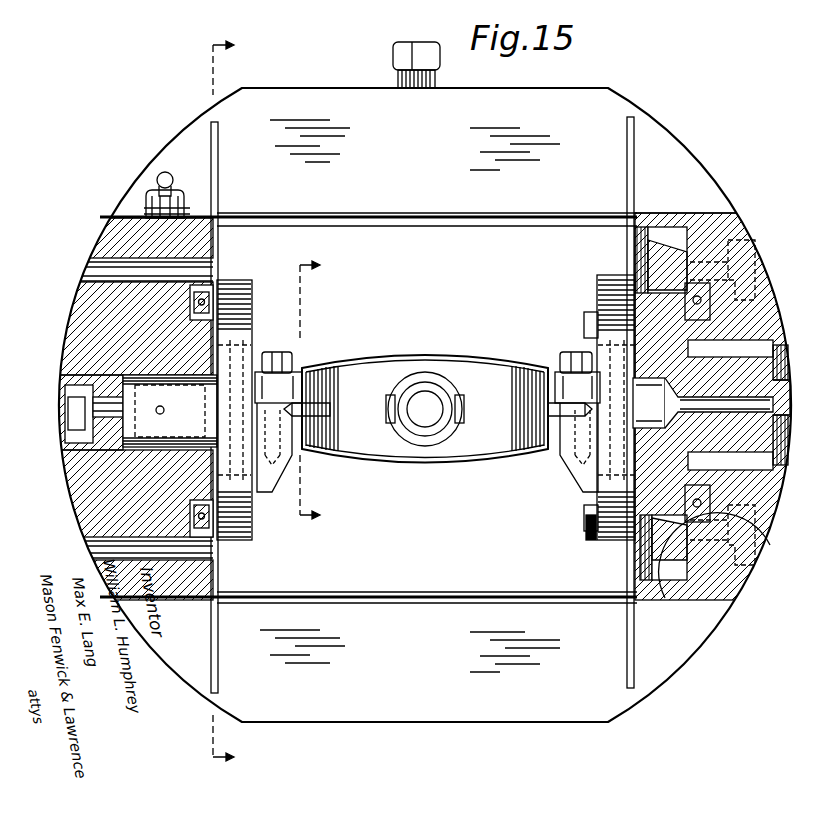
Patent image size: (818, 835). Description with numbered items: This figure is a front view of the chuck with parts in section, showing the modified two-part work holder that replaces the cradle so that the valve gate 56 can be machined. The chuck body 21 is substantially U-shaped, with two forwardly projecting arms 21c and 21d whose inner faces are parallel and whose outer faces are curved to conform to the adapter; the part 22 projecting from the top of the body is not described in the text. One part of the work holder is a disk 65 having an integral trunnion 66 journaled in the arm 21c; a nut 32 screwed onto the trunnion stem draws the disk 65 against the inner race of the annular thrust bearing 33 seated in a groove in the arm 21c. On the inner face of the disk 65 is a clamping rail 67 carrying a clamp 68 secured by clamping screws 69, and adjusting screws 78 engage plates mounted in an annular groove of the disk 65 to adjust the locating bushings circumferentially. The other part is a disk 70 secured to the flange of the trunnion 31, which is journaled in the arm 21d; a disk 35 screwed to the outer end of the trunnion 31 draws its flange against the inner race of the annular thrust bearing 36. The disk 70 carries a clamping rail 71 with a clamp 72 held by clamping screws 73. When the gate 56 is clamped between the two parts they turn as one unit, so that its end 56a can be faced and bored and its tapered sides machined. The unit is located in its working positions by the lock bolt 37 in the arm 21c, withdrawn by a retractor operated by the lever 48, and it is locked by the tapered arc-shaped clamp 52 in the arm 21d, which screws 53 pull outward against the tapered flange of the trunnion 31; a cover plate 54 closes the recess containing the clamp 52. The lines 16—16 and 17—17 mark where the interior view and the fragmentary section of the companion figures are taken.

The chuck body 21 is at (548, 712).
The arm of chuck body 21c is at (115, 248).
The arm of chuck body 21d is at (735, 215).
The filler plug 22 is at (390, 85).
The lever 48 is at (160, 172).
The lock bolt 37 is at (150, 345).
The nut 32 is at (75, 388).
The trunnion 66 is at (90, 490).
The disk 65 is at (232, 285).
The annular thrust bearing 33 is at (215, 545).
The adjusting screws 78 is at (238, 292).
The clamping screws 69 is at (276, 352).
The clamp 68 is at (298, 372).
The clamping rail 67 is at (265, 492).
The end of valve gate 56a is at (322, 380).
The valve gate 56 is at (463, 365).
The clamp 72 is at (556, 372).
The clamping screws 73 is at (575, 352).
The clamping rail 71 is at (570, 462).
The disk 70 is at (600, 528).
The cover plate 54 is at (655, 228).
The screws 53 is at (760, 266).
The trunnion 31 is at (760, 330).
The disk 35 is at (786, 352).
The tapered arc-shaped clamp 52 is at (660, 555).
The annular thrust bearing 36 is at (748, 525).
The section line 17— 17 is at (239, 403).
The section line 16— 16 is at (323, 391).